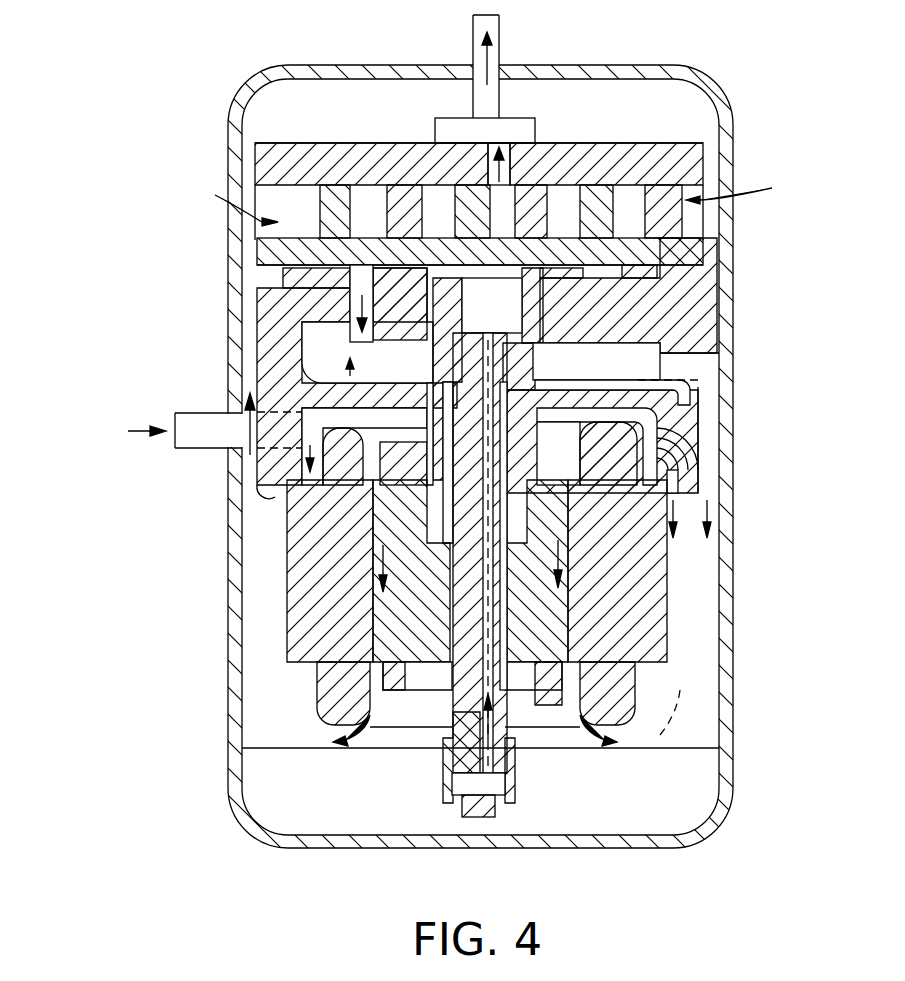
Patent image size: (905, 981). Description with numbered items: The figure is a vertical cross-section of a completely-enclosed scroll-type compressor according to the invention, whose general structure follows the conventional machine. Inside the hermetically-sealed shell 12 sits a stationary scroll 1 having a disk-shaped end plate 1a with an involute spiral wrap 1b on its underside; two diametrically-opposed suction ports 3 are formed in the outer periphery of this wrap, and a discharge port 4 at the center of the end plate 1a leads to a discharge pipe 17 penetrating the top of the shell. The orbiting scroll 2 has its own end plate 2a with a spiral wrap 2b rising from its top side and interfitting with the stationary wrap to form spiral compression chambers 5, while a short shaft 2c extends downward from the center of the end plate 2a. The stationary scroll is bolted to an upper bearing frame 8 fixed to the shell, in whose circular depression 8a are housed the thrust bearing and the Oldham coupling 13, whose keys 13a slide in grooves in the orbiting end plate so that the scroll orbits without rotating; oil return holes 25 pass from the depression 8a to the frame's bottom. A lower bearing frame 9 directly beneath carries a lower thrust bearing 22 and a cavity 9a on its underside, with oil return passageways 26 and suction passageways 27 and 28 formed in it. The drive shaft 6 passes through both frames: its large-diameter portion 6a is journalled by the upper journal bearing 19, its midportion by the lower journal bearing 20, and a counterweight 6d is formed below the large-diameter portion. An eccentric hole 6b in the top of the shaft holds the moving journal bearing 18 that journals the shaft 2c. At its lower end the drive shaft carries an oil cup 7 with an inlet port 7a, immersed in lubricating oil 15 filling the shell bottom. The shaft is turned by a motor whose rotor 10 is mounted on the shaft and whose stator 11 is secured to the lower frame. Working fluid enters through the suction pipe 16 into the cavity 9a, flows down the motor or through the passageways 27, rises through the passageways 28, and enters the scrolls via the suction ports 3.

The stationary scroll 1 is at (672, 118).
The end plate 1a is at (693, 160).
The spiral wrap 1b is at (345, 198).
The orbiting scroll 2 is at (790, 253).
The end plate 2a is at (665, 242).
The spiral wrap 2b is at (322, 190).
The short shaft 2c is at (537, 237).
The suction ports 3 is at (493, 196).
The discharge port 4 is at (500, 152).
The compression chambers 5 is at (378, 196).
The drive shaft 6 is at (452, 680).
The large-diameter portion 6a is at (305, 322).
The eccentric hole 6b is at (493, 290).
The counterweight 6d is at (334, 368).
The oil cup 7 is at (503, 803).
The inlet port 7a is at (478, 817).
The upper bearing frame 8 is at (705, 310).
The depression 8a is at (300, 292).
The lower bearing frame 9 is at (683, 413).
The cavity 9a is at (690, 460).
The rotor 10 is at (550, 583).
The stator 11 is at (670, 612).
The sealed shell 12 is at (726, 680).
The Oldham coupling 13 is at (300, 284).
The keys 13a is at (660, 268).
The lubricating oil 15 is at (235, 778).
The suction pipe 16 is at (200, 440).
The discharge pipe 17 is at (500, 30).
The moving journal bearing 18 is at (596, 361).
The upper journal bearing 19 is at (425, 268).
The lower journal bearing 20 is at (430, 512).
The lower thrust bearing 22 is at (597, 446).
The oil return holes 25 is at (300, 352).
The oil return passageways 26 is at (707, 440).
The suction passageways 27 is at (680, 478).
The suction passageway 28 is at (255, 483).